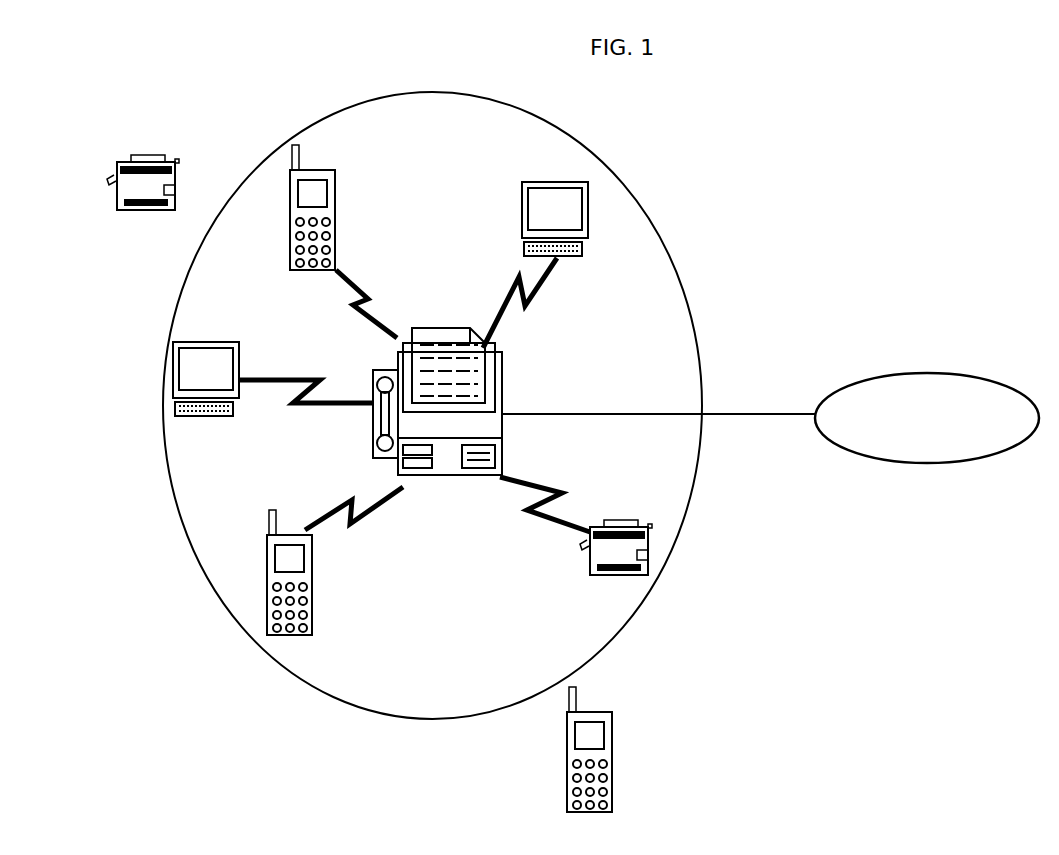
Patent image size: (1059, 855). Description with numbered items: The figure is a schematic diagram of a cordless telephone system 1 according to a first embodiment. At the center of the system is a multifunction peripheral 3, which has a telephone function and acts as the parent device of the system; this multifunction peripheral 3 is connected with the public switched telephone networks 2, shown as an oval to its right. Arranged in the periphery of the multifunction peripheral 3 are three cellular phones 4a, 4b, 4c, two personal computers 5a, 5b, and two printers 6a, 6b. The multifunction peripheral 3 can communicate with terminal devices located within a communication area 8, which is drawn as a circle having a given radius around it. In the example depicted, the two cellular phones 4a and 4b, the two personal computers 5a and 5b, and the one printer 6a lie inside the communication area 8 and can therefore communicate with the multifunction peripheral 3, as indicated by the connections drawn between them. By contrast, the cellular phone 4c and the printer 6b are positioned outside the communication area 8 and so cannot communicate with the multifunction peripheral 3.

The cordless telephone system 1 is at (737, 168).
The public switched telephone networks 2 is at (950, 373).
The multifunction peripheral (MFP) 3 is at (502, 390).
The cellular phone 4a is at (290, 203).
The cellular phone 4b is at (267, 568).
The cellular phone 4c is at (614, 767).
The personal computer 5a is at (588, 215).
The personal computer 5b is at (207, 420).
The printer 6a is at (584, 546).
The printer 6b is at (110, 185).
The communication area 8 is at (365, 712).